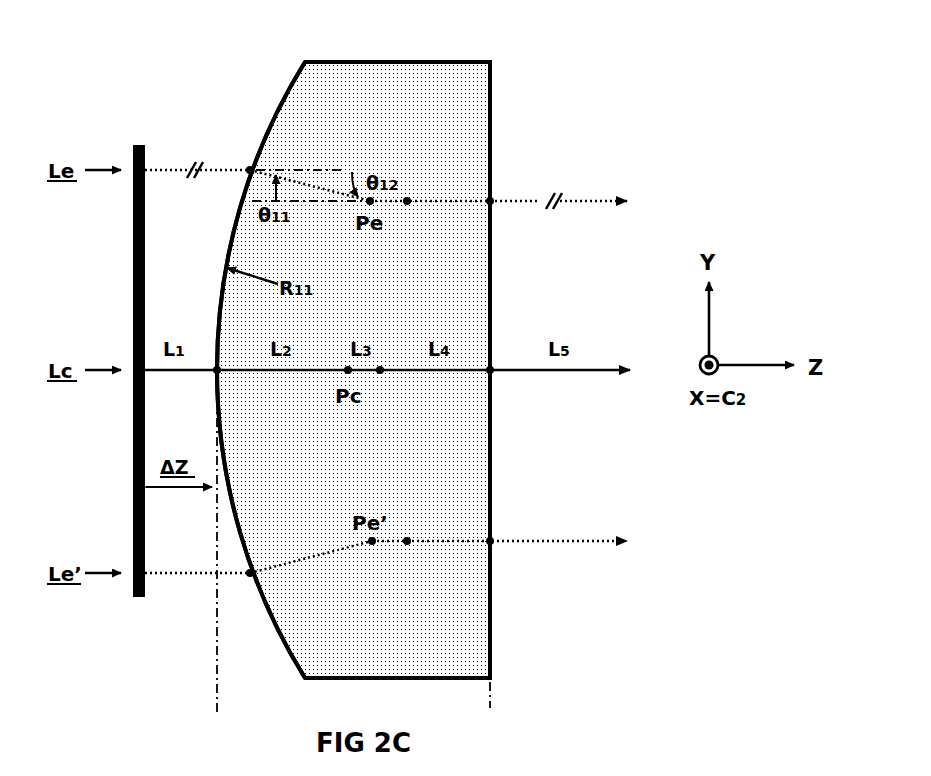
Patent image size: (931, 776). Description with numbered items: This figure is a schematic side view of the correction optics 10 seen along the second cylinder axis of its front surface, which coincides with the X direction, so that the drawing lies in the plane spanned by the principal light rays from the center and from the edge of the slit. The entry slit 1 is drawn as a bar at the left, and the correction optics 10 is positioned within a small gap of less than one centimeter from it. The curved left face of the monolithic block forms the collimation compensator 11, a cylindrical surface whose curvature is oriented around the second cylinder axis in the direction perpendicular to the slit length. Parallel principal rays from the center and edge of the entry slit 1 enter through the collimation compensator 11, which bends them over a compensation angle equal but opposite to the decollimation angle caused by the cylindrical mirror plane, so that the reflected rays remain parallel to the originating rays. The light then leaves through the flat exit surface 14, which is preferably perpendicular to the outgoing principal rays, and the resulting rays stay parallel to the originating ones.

The entry slit 1 is at (141, 603).
The correction optics 10 is at (547, 86).
The collimation compensator 11 is at (250, 143).
The exit surface 14 is at (494, 608).